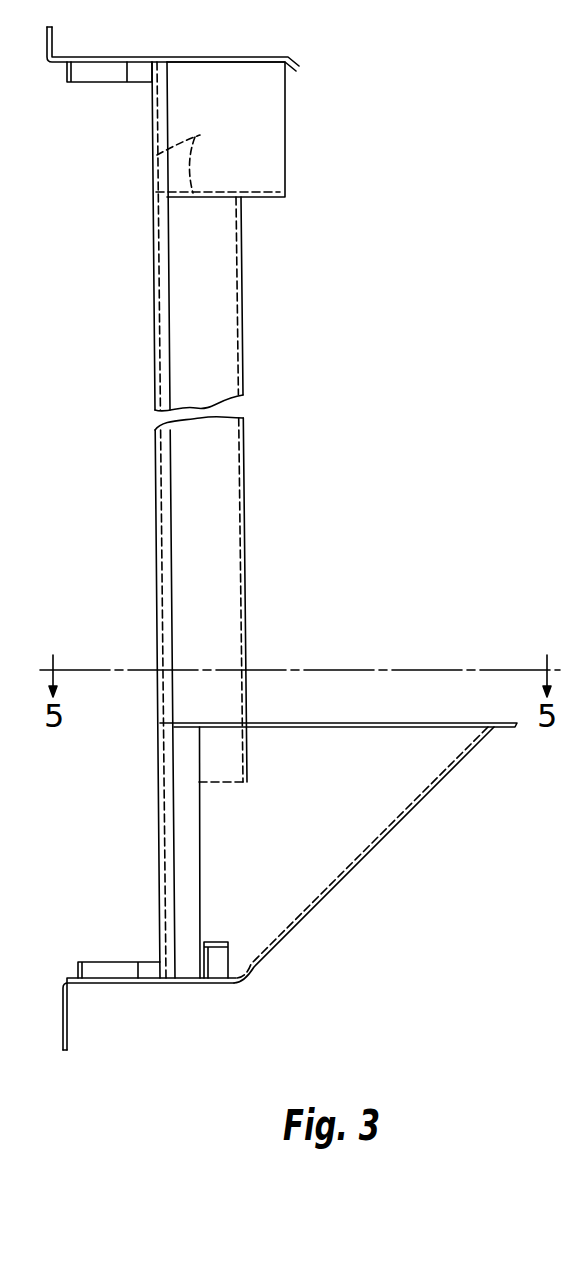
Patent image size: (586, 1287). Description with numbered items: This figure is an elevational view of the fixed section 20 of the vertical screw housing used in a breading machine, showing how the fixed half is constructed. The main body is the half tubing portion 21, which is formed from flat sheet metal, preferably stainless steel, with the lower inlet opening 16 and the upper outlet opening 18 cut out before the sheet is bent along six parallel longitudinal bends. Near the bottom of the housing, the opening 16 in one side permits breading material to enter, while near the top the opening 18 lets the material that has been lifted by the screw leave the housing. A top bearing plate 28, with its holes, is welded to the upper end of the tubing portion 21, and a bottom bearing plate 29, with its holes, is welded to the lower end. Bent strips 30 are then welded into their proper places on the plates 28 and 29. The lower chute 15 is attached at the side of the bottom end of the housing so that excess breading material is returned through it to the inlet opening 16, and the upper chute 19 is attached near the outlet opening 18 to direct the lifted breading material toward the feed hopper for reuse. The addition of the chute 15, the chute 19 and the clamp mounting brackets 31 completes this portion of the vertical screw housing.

The chute 15 is at (402, 740).
The opening 16 is at (208, 848).
The opening 18 is at (193, 138).
The chute 19 is at (285, 135).
The fixed section 20 is at (247, 363).
The half tubing portion 21 is at (248, 567).
The top bearing plate 28 is at (53, 37).
The bottom bearing plate 29 is at (68, 1013).
The bent strips 30 is at (110, 82).
The clamp mounting brackets 31 is at (229, 957).